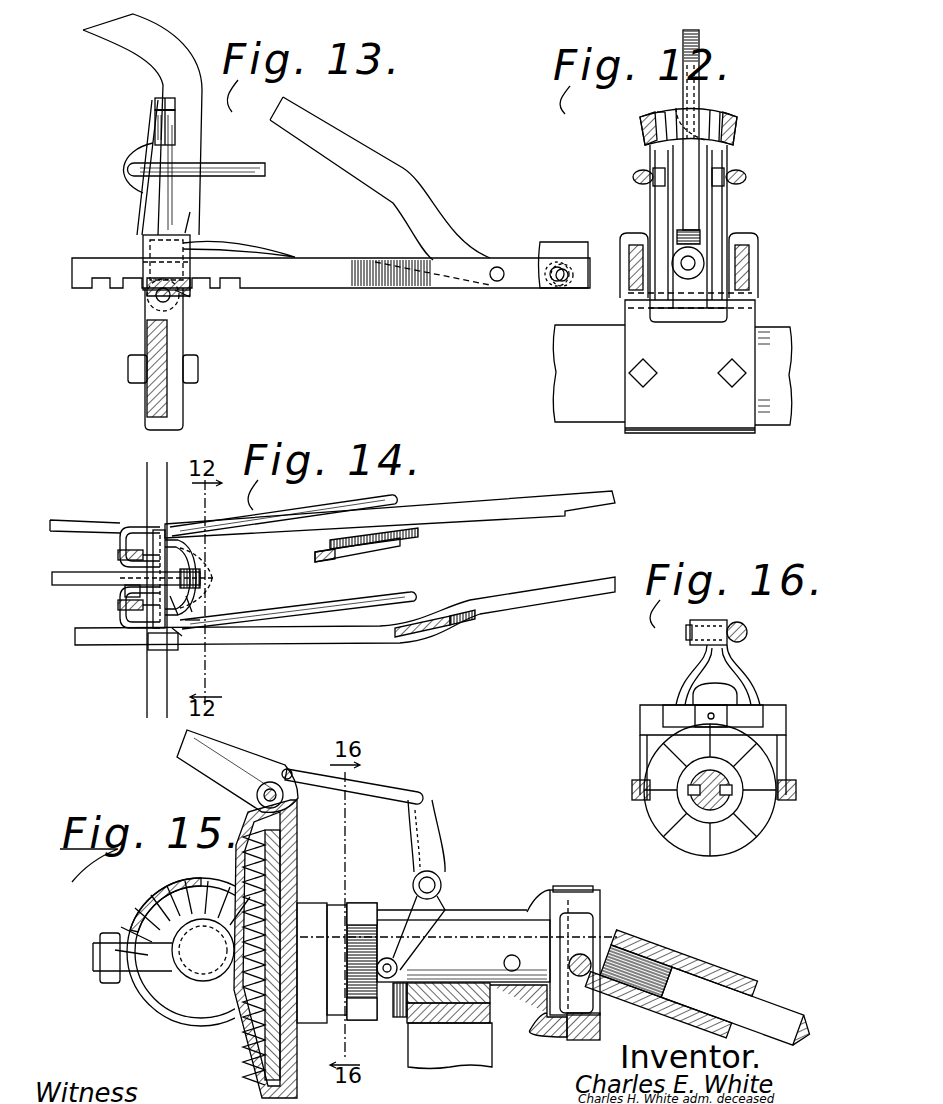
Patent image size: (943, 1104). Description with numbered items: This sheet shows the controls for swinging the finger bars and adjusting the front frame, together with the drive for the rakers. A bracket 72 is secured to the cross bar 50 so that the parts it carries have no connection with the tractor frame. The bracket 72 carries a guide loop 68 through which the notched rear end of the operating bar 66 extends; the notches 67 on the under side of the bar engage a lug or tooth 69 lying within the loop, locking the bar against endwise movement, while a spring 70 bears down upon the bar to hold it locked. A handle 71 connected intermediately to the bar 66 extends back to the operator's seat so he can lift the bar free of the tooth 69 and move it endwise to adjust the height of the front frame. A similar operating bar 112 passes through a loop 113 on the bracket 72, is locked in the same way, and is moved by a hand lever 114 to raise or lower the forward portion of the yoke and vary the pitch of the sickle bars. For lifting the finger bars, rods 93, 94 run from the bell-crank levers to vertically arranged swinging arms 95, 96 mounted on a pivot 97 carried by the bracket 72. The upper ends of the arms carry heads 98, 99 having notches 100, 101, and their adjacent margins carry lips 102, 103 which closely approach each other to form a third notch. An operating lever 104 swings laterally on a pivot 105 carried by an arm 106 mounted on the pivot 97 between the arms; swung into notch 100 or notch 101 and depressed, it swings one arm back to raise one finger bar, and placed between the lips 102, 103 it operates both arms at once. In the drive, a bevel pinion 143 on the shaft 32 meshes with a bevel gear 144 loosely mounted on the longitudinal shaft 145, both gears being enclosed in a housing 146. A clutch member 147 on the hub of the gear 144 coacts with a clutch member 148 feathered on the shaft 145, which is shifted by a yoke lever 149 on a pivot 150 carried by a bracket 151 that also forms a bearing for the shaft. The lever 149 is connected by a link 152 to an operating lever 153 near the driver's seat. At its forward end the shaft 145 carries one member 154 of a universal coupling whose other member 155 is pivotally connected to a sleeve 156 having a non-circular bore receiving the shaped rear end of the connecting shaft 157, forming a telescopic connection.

In FIG. 15, the shaft 32 is at (185, 950).
In FIG. 13, the cross bar 50 is at (152, 398).
In FIG. 12, the cross bar 50 is at (787, 385).
In FIG. 14, the cross bar 50 is at (147, 466).
In FIG. 12, the operating bar 66 is at (750, 288).
In FIG. 14, the operating bar 66 is at (66, 520).
In FIG. 13, the notches 67 is at (125, 284).
In FIG. 12, the guide loop 68 is at (758, 272).
In FIG. 14, the guide loop 68 is at (150, 527).
In FIG. 12, the lug or tooth 69 is at (732, 297).
In FIG. 13, the spring 70 is at (232, 238).
In FIG. 12, the spring 70 is at (750, 252).
In FIG. 14, the spring 70 is at (292, 538).
In FIG. 14, the handle 71 is at (340, 554).
In FIG. 12, the bracket 72 is at (640, 426).
In FIG. 14, the bracket 72 is at (192, 620).
In FIG. 12, the rod 93 is at (738, 176).
In FIG. 14, the rod 93 is at (396, 500).
In FIG. 13, the rod 94 is at (227, 175).
In FIG. 12, the rod 94 is at (638, 175).
In FIG. 14, the rod 94 is at (413, 597).
In FIG. 12, the swinging arm 95 is at (727, 197).
In FIG. 14, the swinging arm 95 is at (160, 530).
In FIG. 13, the swinging arm 96 is at (143, 193).
In FIG. 12, the swinging arm 96 is at (652, 200).
In FIG. 13, the pivot 97 is at (158, 297).
In FIG. 12, the pivot 97 is at (650, 305).
In FIG. 12, the head 98 is at (737, 130).
In FIG. 14, the head 98 is at (176, 540).
In FIG. 13, the head 99 is at (155, 137).
In FIG. 12, the head 99 is at (645, 128).
In FIG. 14, the head 99 is at (165, 640).
In FIG. 12, the notch 100 is at (712, 114).
In FIG. 14, the notch 100 is at (190, 553).
In FIG. 13, the notch 101 is at (172, 108).
In FIG. 12, the notch 101 is at (673, 115).
In FIG. 14, the notch 101 is at (182, 630).
In FIG. 12, the lip 102 is at (702, 96).
In FIG. 14, the lip 102 is at (200, 575).
In FIG. 13, the lip 103 is at (158, 102).
In FIG. 12, the lip 103 is at (700, 72).
In FIG. 14, the lip 103 is at (190, 600).
In FIG. 13, the operating lever 104 is at (133, 42).
In FIG. 12, the operating lever 104 is at (700, 45).
In FIG. 14, the operating lever 104 is at (72, 552).
In FIG. 13, the pivot 105 is at (140, 252).
In FIG. 12, the pivot 105 is at (700, 248).
In FIG. 13, the arm 106 is at (185, 290).
In FIG. 12, the arm 106 is at (688, 292).
In FIG. 14, the arm 106 is at (127, 590).
In FIG. 13, the operating bar 112 is at (392, 272).
In FIG. 12, the operating bar 112 is at (632, 265).
In FIG. 14, the operating bar 112 is at (440, 638).
In FIG. 13, the loop 113 is at (186, 230).
In FIG. 12, the loop 113 is at (625, 240).
In FIG. 14, the loop 113 is at (150, 648).
In FIG. 13, the hand lever 114 is at (380, 187).
In FIG. 14, the hand lever 114 is at (398, 637).
In FIG. 15, the bevel pinion 143 is at (178, 905).
In FIG. 15, the bevel gear 144 is at (290, 842).
In FIG. 16, the shaft 145 is at (740, 838).
In FIG. 15, the shaft 145 is at (305, 922).
In FIG. 15, the housing 146 is at (252, 822).
In FIG. 15, the clutch member 147 is at (308, 1020).
In FIG. 16, the clutch member 148 is at (757, 817).
In FIG. 15, the clutch member 148 is at (362, 1020).
In FIG. 16, the yoke lever 149 is at (740, 672).
In FIG. 15, the yoke lever 149 is at (410, 822).
In FIG. 16, the pivot 150 is at (762, 703).
In FIG. 15, the pivot 150 is at (418, 876).
In FIG. 16, the bracket 151 is at (703, 695).
In FIG. 15, the bracket 151 is at (455, 922).
In FIG. 16, the link 152 is at (747, 631).
In FIG. 15, the link 152 is at (400, 782).
In FIG. 15, the operating lever 153 is at (255, 750).
In FIG. 15, the universal coupling member 154 is at (540, 912).
In FIG. 15, the universal coupling member 155 is at (600, 920).
In FIG. 15, the sleeve 156 is at (690, 950).
In FIG. 15, the connecting shaft 157 is at (768, 1002).